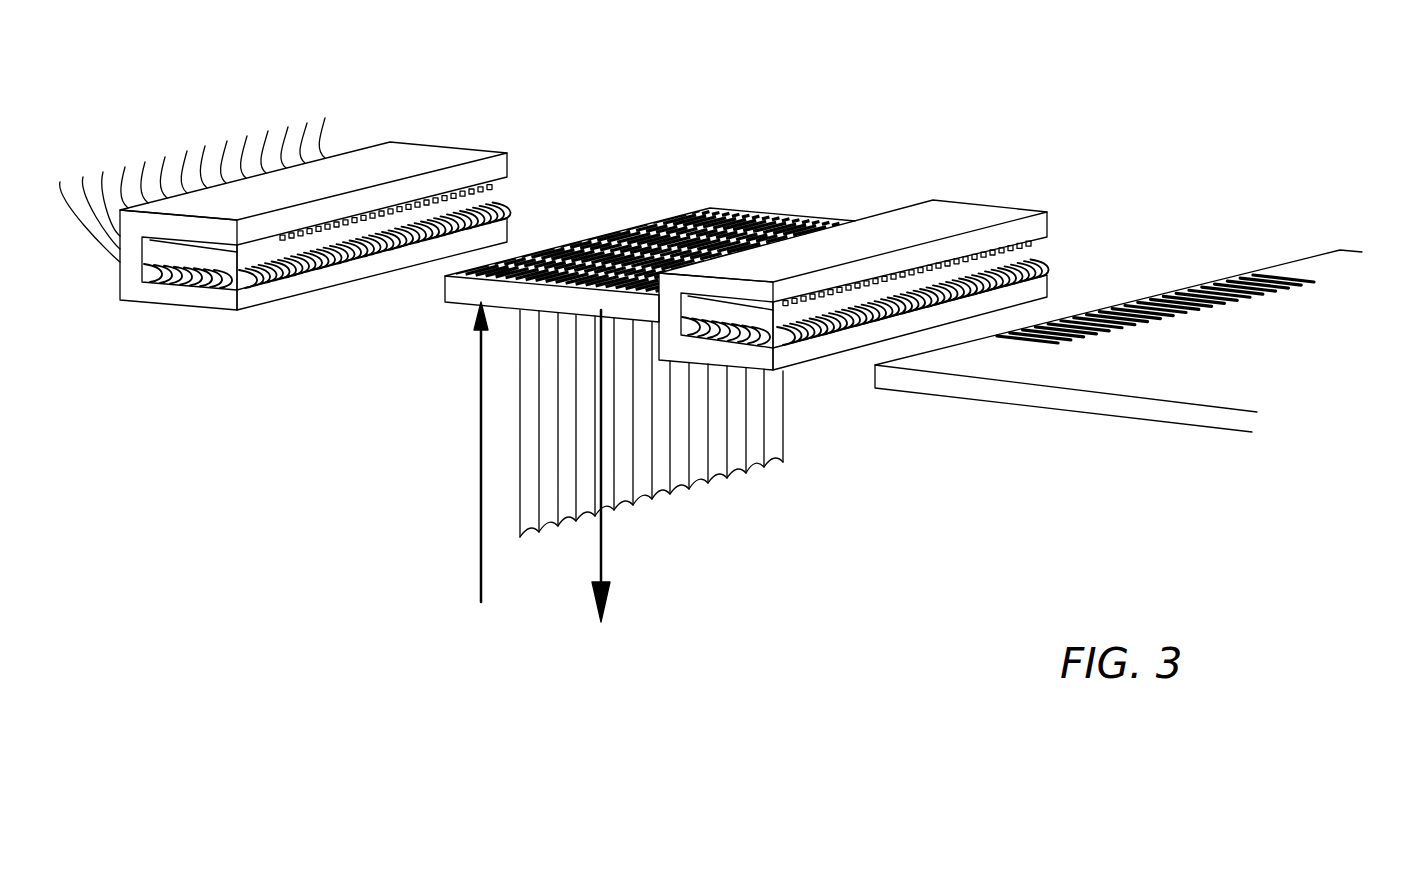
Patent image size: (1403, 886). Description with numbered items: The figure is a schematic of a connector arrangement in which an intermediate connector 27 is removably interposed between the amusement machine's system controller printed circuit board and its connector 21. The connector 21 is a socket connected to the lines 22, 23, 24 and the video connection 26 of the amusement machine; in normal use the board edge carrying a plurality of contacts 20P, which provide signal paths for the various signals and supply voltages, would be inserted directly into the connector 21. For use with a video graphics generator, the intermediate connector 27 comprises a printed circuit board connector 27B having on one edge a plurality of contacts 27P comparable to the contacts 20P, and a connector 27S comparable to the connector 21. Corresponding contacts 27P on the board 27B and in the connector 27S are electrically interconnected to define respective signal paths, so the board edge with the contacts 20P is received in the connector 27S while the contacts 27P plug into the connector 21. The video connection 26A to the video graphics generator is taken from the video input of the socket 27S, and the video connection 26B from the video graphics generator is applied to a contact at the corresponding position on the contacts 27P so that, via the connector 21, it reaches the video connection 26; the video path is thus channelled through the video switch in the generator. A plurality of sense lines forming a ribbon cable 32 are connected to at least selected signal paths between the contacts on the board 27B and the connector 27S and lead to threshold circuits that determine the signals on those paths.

The connector 21 is at (447, 143).
The line 22 is at (322, 101).
The line 23 is at (176, 130).
The line 24 is at (260, 108).
The video connection 26 is at (120, 260).
The video connection to the video graphics generator 26A is at (608, 485).
The video connection from the video graphics generator 26B is at (481, 475).
The intermediate connector 27 is at (788, 206).
The contacts 27P is at (723, 205).
The printed circuit board connector 27B is at (800, 213).
The connector 27S is at (854, 253).
The ribbon cable 32 is at (783, 484).
The contacts 20P is at (1210, 278).